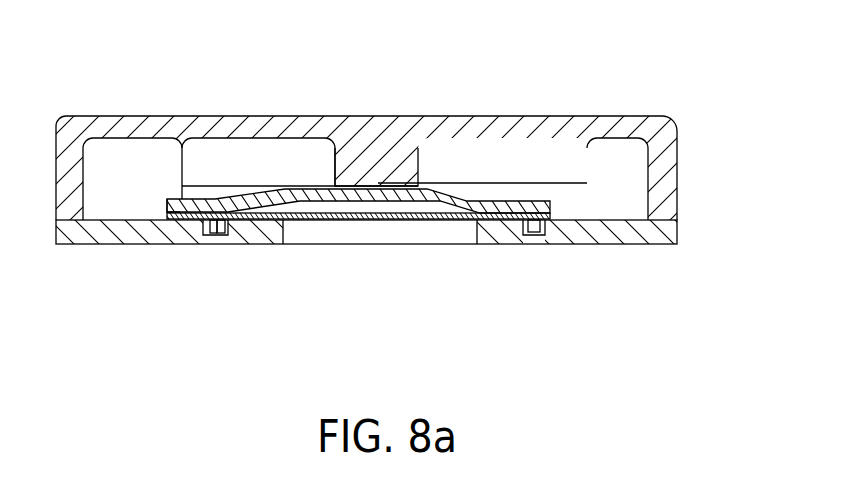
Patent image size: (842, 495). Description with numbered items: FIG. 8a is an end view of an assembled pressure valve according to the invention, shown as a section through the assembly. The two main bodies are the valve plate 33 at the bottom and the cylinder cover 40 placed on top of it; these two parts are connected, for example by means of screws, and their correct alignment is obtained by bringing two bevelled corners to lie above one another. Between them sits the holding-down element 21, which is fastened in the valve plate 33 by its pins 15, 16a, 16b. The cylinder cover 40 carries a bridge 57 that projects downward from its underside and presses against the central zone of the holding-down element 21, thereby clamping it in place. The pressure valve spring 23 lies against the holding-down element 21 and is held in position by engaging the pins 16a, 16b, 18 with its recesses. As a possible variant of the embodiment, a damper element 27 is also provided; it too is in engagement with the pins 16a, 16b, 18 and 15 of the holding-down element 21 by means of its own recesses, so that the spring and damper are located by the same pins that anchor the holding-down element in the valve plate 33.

The cylinder cover 40 is at (540, 118).
The bridge 57 is at (364, 172).
The valve plate 33 is at (607, 234).
The pressure valve spring 23 is at (307, 221).
The pin 16a is at (211, 225).
The pin 16b is at (211, 225).
The pin 15 is at (533, 228).
The damper element 27 is at (416, 216).
The holding-down element 21 is at (433, 196).
The pin 18 is at (168, 213).